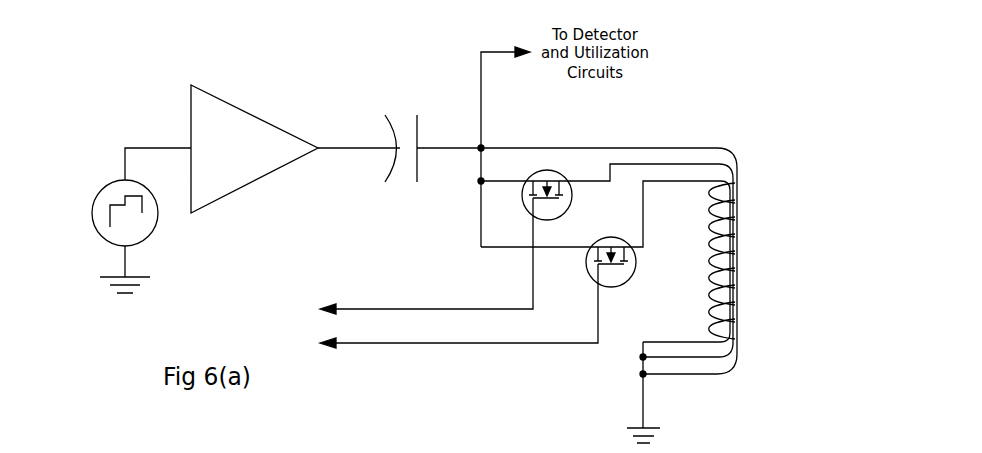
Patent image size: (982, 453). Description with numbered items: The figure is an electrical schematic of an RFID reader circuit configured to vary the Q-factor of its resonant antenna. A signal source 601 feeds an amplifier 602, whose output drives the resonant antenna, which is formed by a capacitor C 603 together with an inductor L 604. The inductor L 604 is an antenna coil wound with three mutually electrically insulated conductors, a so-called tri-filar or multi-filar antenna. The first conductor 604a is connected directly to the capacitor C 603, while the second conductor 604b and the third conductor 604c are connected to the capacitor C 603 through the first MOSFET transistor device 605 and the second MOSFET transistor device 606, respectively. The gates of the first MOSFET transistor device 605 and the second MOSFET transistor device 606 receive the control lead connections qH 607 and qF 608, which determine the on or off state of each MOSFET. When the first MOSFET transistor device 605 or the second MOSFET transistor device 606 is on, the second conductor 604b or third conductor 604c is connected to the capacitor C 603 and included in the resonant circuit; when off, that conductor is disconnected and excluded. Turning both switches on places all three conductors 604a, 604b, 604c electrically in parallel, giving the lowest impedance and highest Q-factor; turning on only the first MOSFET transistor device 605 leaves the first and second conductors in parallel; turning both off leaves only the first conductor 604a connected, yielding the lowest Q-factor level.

The signal source 601 is at (92, 190).
The amplifier 602 is at (255, 102).
The capacitor C 603 is at (400, 102).
The inductor L 604 is at (659, 224).
The first conductor 604a is at (740, 160).
The second conductor 604b is at (740, 207).
The third conductor 604c is at (742, 262).
The MOSFET transistor device Q1 605 is at (578, 165).
The MOSFET transistor device Q2 606 is at (579, 277).
The control lead connection qH 607 is at (305, 303).
The control lead connection qF 608 is at (295, 358).